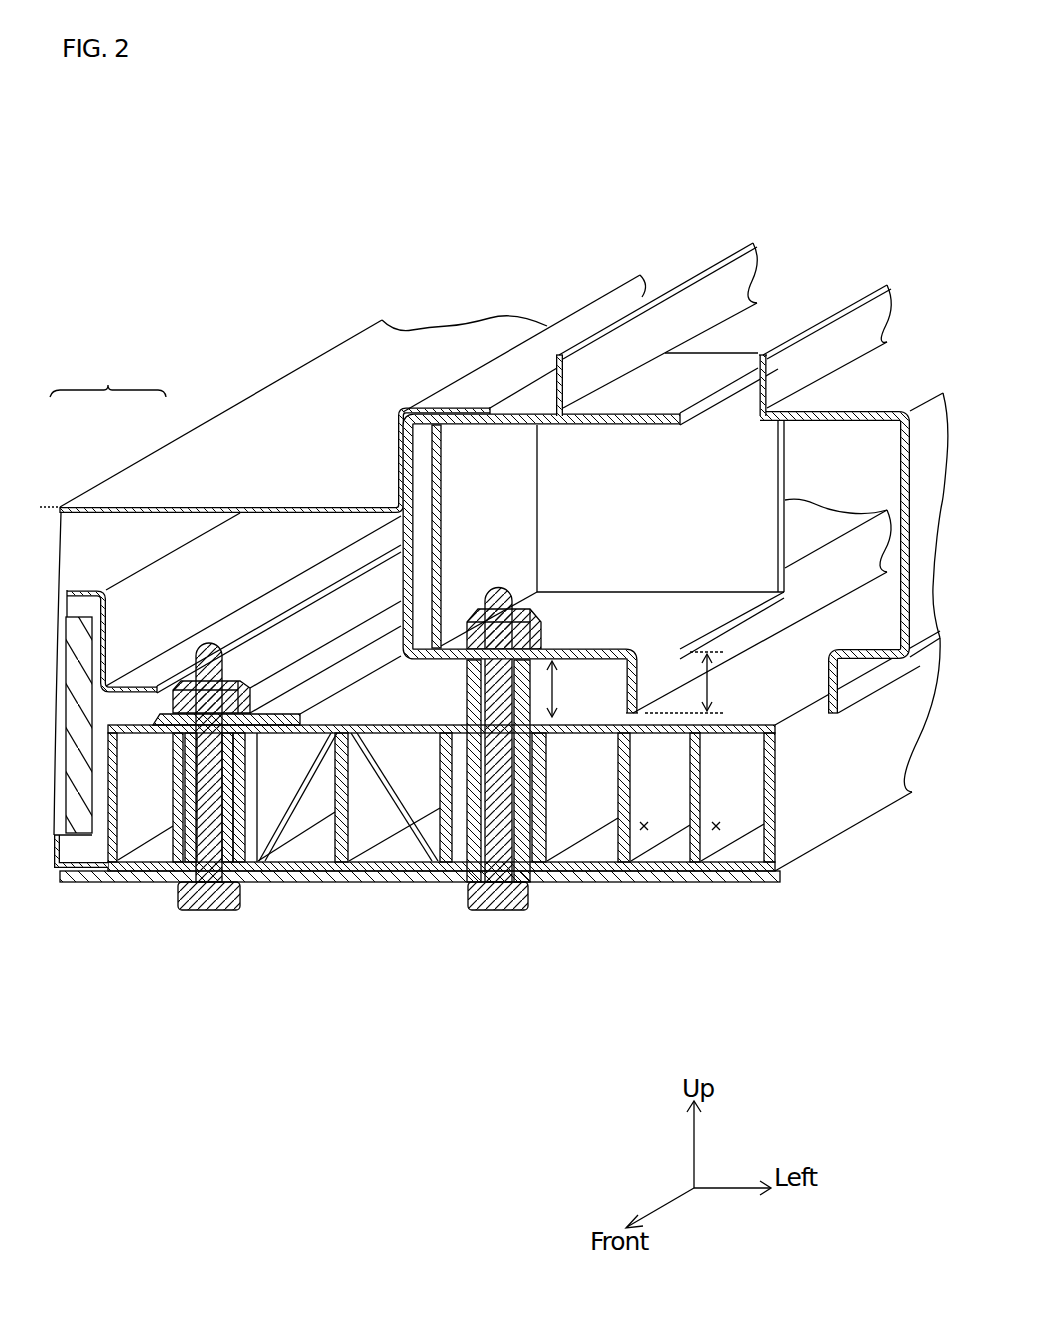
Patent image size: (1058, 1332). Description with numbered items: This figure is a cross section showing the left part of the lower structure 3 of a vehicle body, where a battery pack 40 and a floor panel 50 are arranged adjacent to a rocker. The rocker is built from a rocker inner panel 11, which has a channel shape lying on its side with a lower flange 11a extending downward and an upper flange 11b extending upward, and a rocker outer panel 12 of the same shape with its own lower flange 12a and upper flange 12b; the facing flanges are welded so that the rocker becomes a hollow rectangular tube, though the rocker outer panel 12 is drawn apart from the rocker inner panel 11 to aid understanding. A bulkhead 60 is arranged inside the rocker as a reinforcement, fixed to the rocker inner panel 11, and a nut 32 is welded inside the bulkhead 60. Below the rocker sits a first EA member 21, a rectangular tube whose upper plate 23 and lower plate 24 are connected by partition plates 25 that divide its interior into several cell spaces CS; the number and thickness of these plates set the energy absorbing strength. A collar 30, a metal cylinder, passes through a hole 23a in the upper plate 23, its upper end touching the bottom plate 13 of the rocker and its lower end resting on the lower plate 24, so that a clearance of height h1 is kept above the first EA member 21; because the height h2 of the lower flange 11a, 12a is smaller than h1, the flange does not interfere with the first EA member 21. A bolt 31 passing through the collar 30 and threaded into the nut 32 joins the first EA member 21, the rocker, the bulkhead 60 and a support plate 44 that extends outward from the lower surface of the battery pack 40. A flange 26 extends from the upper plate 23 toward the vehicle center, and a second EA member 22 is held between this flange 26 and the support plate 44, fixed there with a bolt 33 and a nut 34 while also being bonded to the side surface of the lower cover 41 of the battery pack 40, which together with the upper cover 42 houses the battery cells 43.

The lower structure 3 is at (228, 203).
The rocker inner panel 11 is at (533, 400).
The lower flange 11a is at (753, 636).
The upper flange 11b is at (750, 243).
The rocker outer panel 12 is at (920, 377).
The lower flange 12a is at (857, 687).
The upper flange 12b is at (860, 292).
The bottom plate 13 is at (588, 690).
The first EA member 21 is at (785, 880).
The second EA member 22 is at (122, 872).
The upper plate 23 is at (730, 733).
The hole 23a is at (440, 707).
The lower plate 24 is at (640, 872).
The partition plate 25 is at (693, 850).
The flange 26 is at (148, 728).
The collar 30 is at (466, 840).
The bolt 31 is at (500, 910).
The nut 32 is at (465, 609).
The bolt 33 is at (205, 910).
The nut 34 is at (258, 690).
The battery pack 40 is at (108, 378).
The lower cover 41 is at (128, 712).
The upper cover 42 is at (118, 605).
The battery cell 43 is at (83, 612).
The support plate 44 is at (275, 882).
The floor panel 50 is at (325, 356).
The bulkhead 60 is at (650, 390).
The cell space CS is at (645, 832).
The height of collar above first EA member h1 is at (567, 689).
The height of lower flange h2 is at (693, 682).